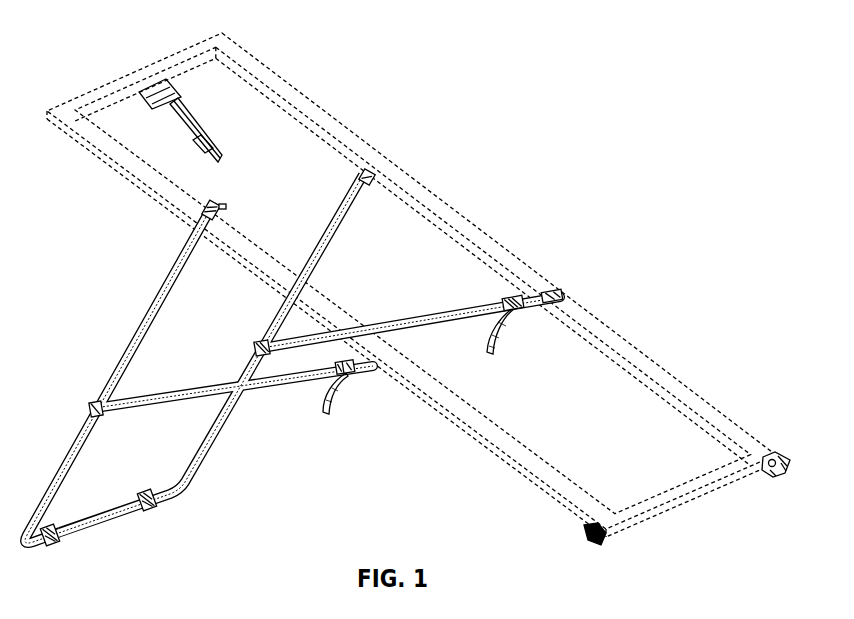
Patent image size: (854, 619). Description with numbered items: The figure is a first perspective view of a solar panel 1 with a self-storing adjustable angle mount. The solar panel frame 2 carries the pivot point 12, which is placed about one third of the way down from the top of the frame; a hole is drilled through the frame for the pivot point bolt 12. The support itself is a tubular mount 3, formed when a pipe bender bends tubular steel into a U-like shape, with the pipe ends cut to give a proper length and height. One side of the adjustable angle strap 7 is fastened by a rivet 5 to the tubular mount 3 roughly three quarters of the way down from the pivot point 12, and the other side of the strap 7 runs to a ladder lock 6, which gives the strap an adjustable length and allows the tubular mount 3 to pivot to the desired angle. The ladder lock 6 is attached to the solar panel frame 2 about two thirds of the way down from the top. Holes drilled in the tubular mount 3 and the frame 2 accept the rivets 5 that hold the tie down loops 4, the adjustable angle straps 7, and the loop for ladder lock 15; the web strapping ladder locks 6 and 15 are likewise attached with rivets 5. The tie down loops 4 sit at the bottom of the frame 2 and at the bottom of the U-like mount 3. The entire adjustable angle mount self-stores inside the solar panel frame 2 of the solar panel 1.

The sign assembly 1 is at (506, 226).
The solar panel frame 2 is at (667, 378).
The tubular mount 3 is at (125, 333).
The tie down loops 4 is at (149, 516).
The rivet 5 is at (251, 345).
The ladder lock 6 is at (519, 318).
The adjustable angle strap 7 is at (392, 317).
The pivot point bolt 12 is at (229, 208).
The loop for ladder lock 15 is at (531, 291).